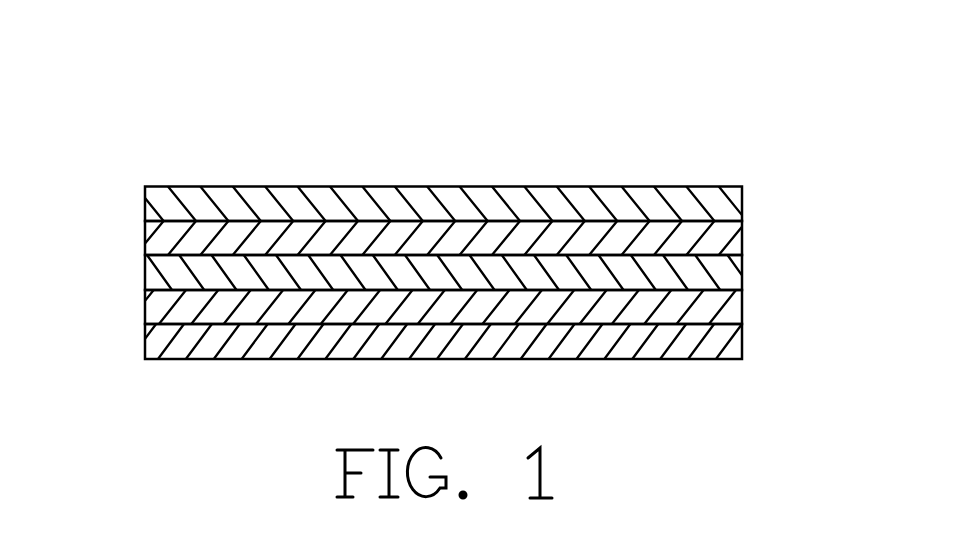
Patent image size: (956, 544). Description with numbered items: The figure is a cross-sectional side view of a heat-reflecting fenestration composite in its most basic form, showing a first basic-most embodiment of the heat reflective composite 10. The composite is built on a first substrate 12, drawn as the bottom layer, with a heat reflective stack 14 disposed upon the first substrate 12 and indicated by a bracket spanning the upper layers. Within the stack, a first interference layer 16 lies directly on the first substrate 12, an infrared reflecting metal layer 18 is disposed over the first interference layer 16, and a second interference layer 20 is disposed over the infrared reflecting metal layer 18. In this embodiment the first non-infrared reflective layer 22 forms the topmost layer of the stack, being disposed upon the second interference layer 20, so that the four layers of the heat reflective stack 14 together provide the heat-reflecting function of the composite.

The heat reflective composite 10 is at (487, 150).
The first substrate 12 is at (723, 337).
The heat reflective stack 14 is at (448, 246).
The first interference layer 16 is at (742, 307).
The infrared reflecting metal layer 18 is at (730, 273).
The second interference layer 20 is at (733, 240).
The first non-infrared reflective layer 22 is at (742, 205).